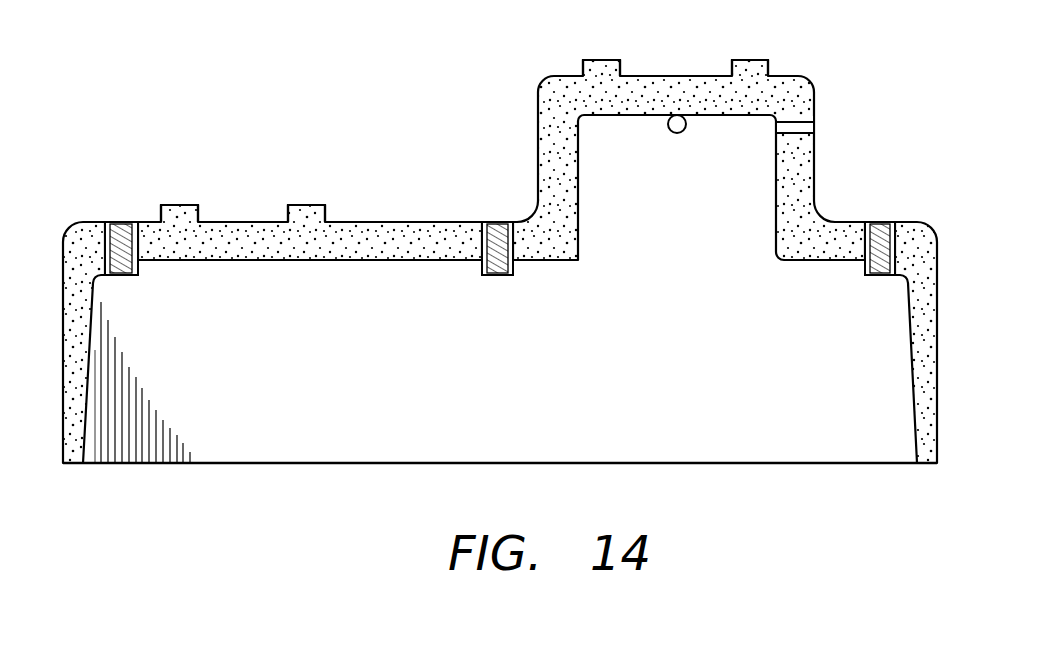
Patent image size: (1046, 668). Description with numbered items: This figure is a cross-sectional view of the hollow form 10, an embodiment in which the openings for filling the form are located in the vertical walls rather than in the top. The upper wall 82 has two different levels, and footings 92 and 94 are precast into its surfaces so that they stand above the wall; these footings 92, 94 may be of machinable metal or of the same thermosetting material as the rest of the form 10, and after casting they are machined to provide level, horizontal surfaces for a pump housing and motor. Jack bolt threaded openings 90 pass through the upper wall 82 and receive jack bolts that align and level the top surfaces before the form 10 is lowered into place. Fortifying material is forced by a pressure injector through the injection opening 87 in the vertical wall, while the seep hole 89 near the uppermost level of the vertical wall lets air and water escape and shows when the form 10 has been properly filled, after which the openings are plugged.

The form 10 is at (155, 109).
The upper wall 82 is at (408, 221).
The injection opening 87 is at (815, 124).
The seep hole 89 is at (677, 133).
The jack bolt threaded openings 90 is at (121, 220).
The footing 92 is at (182, 204).
The footing 94 is at (600, 59).